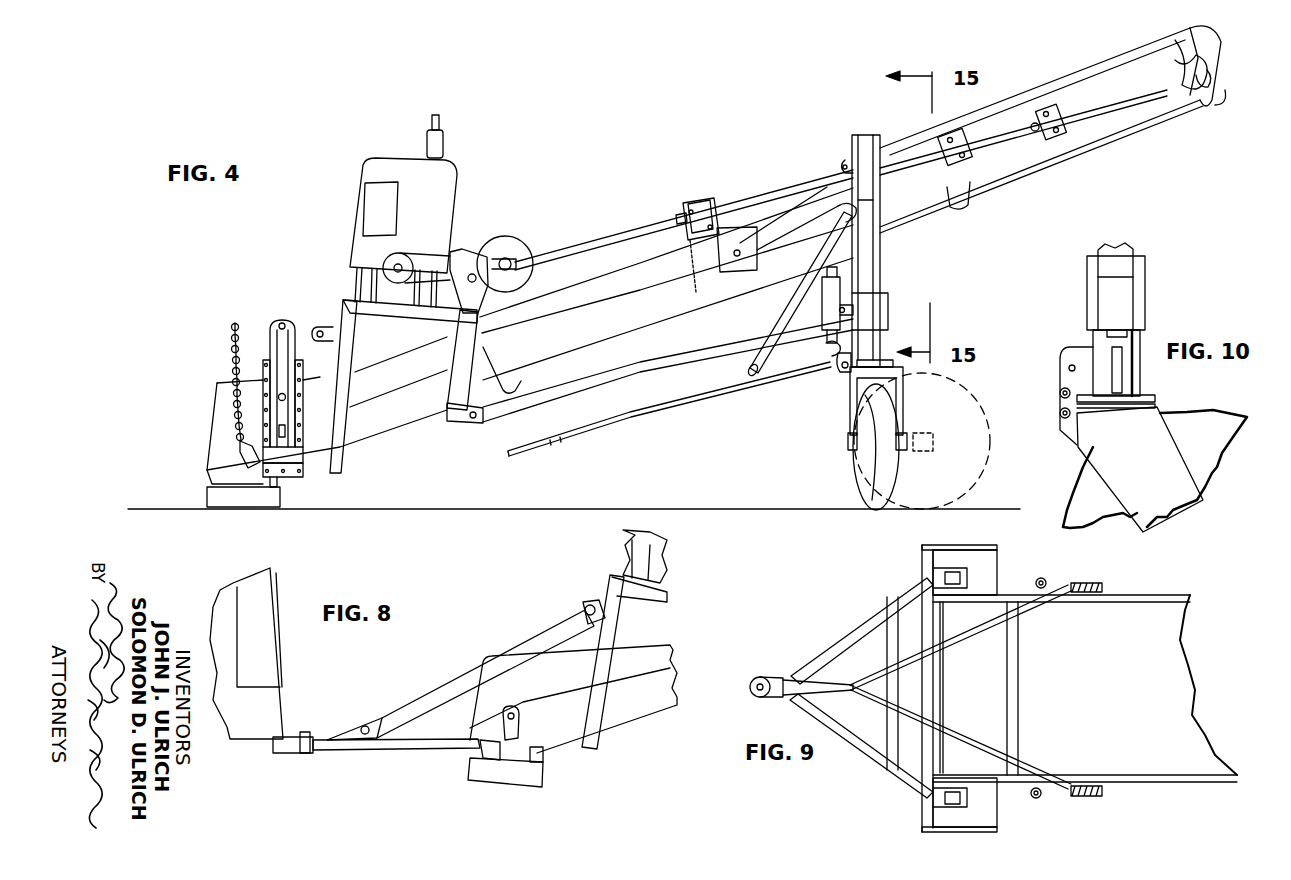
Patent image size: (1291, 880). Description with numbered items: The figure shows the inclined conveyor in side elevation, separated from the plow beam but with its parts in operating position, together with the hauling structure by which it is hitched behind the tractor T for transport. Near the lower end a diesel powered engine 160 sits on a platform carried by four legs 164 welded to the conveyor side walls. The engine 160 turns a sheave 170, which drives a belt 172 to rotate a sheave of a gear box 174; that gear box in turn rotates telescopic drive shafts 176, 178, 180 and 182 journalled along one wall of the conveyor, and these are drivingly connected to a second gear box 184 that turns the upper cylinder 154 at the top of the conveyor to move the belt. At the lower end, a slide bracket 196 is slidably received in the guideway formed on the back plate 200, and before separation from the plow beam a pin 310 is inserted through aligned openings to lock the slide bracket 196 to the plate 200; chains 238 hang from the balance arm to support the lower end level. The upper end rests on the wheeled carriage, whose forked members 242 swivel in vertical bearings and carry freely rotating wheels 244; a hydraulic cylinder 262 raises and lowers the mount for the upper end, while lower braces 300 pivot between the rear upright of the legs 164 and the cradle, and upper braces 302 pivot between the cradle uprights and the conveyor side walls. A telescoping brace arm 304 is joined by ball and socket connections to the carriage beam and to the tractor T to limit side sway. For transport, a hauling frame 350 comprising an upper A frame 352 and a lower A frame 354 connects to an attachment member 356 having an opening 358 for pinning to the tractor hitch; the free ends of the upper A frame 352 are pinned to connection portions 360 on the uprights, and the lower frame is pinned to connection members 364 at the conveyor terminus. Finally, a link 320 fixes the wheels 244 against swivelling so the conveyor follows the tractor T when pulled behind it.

In FIG. 4, the upper cylinder 154 is at (1208, 85).
In FIG. 4, the diesel powered engine 160 is at (455, 176).
In FIG. 4, the legs 164 is at (343, 450).
In FIG. 8, the legs 164 is at (597, 733).
In FIG. 9, the legs 164 is at (952, 688).
In FIG. 4, the sheave 170 is at (388, 262).
In FIG. 4, the belt 172 is at (443, 258).
In FIG. 4, the gear box 174 is at (510, 245).
In FIG. 4, the telescopic drive shaft 176 is at (657, 226).
In FIG. 4, the telescopic drive shaft 178 is at (810, 183).
In FIG. 4, the telescopic drive shaft 180 is at (990, 120).
In FIG. 4, the telescopic drive shaft 182 is at (1090, 85).
In FIG. 4, the second gear box 184 is at (1172, 45).
In FIG. 4, the slide bracket 196 is at (278, 320).
In FIG. 4, the back plate 200 is at (264, 368).
In FIG. 4, the chains 238 is at (230, 324).
In FIG. 4, the forked members 242 is at (848, 428).
In FIG. 10, the forked members 242 is at (1093, 465).
In FIG. 4, the wheels 244 is at (858, 478).
In FIG. 10, the wheels 244 is at (1200, 413).
In FIG. 4, the hydraulic cylinder 262 is at (884, 277).
In FIG. 4, the lower braces 300 is at (742, 340).
In FIG. 4, the upper braces 302 is at (763, 227).
In FIG. 4, the telescoping brace arm 304 is at (700, 395).
In FIG. 4, the pin 310 is at (278, 397).
In FIG. 10, the link 320 is at (1058, 405).
In FIG. 8, the hauling frame 350 is at (447, 660).
In FIG. 8, the upper A frame 352 is at (425, 693).
In FIG. 9, the upper A frame 352 is at (945, 642).
In FIG. 8, the lower A frame 354 is at (420, 748).
In FIG. 9, the lower A frame 354 is at (862, 625).
In FIG. 8, the attachment member 356 is at (340, 745).
In FIG. 9, the attachment member 356 is at (770, 700).
In FIG. 9, the opening 358 is at (757, 680).
In FIG. 4, the connection portions 360 is at (322, 327).
In FIG. 8, the connection portions 360 is at (585, 606).
In FIG. 9, the connection portions 360 is at (1058, 598).
In FIG. 9, the mounting bracket 364 is at (967, 578).
In FIG. 8, the tractor T is at (267, 598).